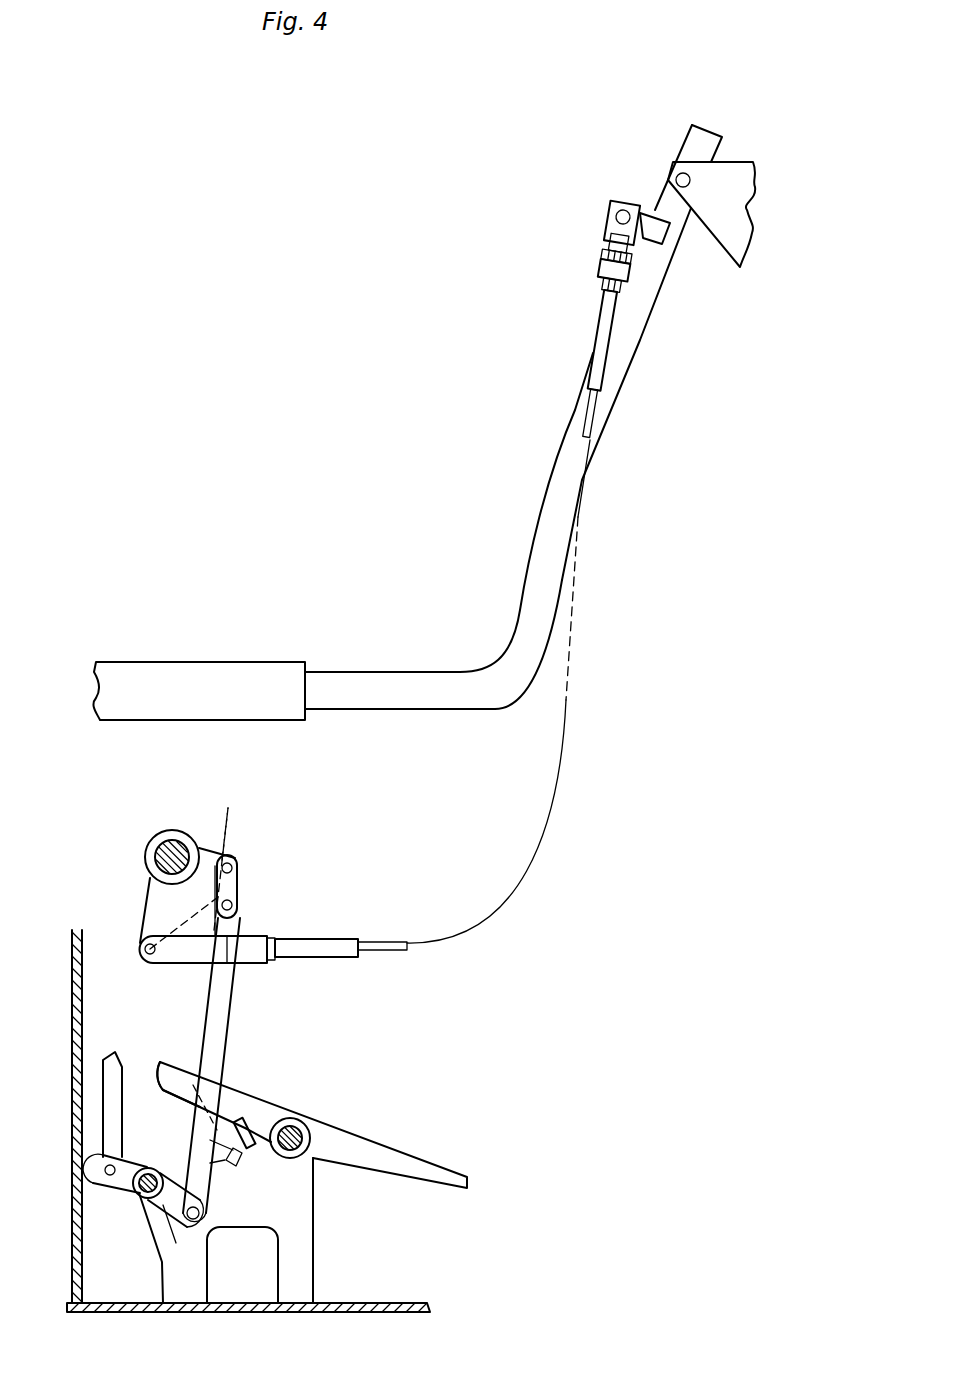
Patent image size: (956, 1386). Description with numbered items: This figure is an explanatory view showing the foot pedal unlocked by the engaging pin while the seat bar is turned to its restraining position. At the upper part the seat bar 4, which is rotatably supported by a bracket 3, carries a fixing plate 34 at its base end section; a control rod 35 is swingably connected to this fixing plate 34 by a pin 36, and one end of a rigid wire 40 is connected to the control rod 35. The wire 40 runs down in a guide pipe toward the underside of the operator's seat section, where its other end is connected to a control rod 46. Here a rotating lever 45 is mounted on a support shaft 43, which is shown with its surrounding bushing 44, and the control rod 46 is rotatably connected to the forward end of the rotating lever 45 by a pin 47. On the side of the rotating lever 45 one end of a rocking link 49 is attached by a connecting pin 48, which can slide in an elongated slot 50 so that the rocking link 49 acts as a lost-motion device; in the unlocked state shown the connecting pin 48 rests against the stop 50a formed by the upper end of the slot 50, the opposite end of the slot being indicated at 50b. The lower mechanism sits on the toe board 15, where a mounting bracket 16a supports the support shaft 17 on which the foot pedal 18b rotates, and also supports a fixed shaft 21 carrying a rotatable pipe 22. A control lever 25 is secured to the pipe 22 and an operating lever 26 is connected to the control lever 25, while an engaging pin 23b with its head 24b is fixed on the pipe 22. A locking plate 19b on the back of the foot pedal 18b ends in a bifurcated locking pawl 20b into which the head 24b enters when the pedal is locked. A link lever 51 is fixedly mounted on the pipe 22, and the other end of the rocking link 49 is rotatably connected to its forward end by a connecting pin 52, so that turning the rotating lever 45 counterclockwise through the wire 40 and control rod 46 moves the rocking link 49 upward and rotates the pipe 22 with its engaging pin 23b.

The bracket 3 is at (715, 227).
The seat bar 4 is at (385, 672).
The toe board 15 is at (340, 1313).
The mounting bracket 16a is at (307, 1260).
The support shaft 17 is at (315, 1122).
The foot pedal 18b is at (405, 1157).
The locking plate 19b is at (177, 1093).
The locking pawl 20b is at (243, 1153).
The fixed shaft 21 is at (148, 1200).
The pipe 22 is at (132, 1193).
The engaging pin 23b is at (220, 1163).
The head 24b is at (243, 1112).
The control lever 25 is at (92, 1172).
The operating lever 26 is at (122, 1063).
The fixing plate 34 is at (665, 241).
The control rod 35 is at (605, 270).
The pin 36 is at (624, 205).
The wire 40 is at (590, 420).
The support shaft 43 is at (187, 842).
The bushing 44 is at (150, 848).
The rotating lever 45 is at (143, 901).
The control rod 46 is at (257, 935).
The pin 47 is at (144, 953).
The connecting pin 48 is at (237, 863).
The rocking link 49 is at (228, 1002).
The slot 50 is at (237, 903).
The stop 50a is at (255, 826).
The link lower end position 50b is at (250, 892).
The link lever 51 is at (167, 1217).
The connecting pin 52 is at (210, 1228).